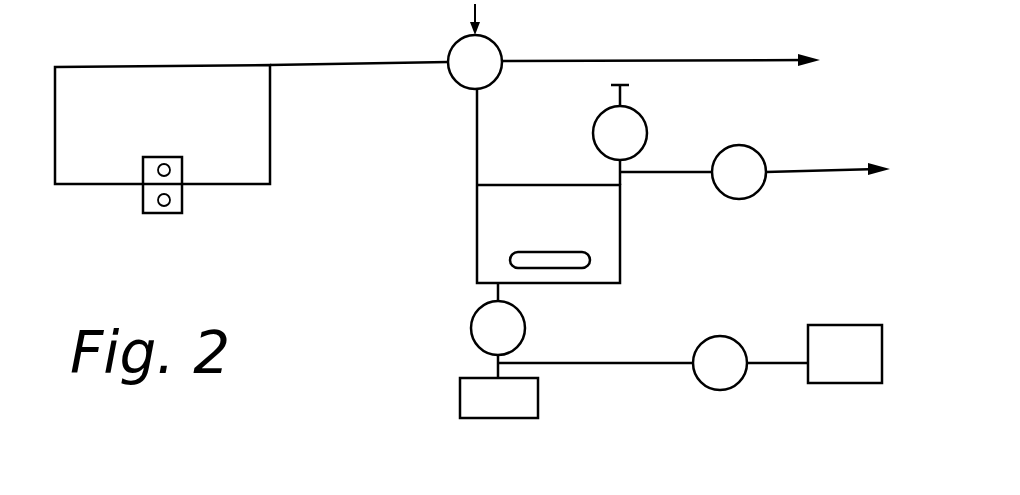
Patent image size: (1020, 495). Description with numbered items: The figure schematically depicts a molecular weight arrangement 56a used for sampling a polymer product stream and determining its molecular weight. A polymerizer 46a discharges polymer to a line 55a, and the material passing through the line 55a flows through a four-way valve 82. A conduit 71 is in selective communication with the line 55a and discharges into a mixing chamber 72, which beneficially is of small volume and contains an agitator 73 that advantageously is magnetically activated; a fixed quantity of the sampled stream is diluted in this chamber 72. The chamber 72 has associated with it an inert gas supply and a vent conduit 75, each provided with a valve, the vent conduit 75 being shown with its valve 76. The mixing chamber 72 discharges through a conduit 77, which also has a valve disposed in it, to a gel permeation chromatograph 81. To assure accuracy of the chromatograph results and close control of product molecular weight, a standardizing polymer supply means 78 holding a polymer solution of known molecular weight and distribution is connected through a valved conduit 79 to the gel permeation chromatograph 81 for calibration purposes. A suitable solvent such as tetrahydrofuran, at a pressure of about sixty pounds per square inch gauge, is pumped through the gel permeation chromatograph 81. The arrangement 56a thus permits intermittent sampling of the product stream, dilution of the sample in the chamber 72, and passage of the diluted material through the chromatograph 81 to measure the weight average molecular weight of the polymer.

The polymerizer 46a is at (55, 88).
The line 55a is at (378, 62).
The four-way valve 82 is at (498, 46).
The conduit 71 is at (476, 103).
The mixing chamber 72 is at (476, 205).
The agitator 73 is at (542, 258).
The valve 76 is at (645, 118).
The vent conduit 75 is at (745, 147).
The molecular weight arrangement 56a is at (377, 237).
The conduit 77 is at (497, 358).
The gel permeation chromatograph 81 is at (462, 405).
The valved conduit 79 is at (762, 366).
The standardizing polymer supply means 78 is at (835, 332).